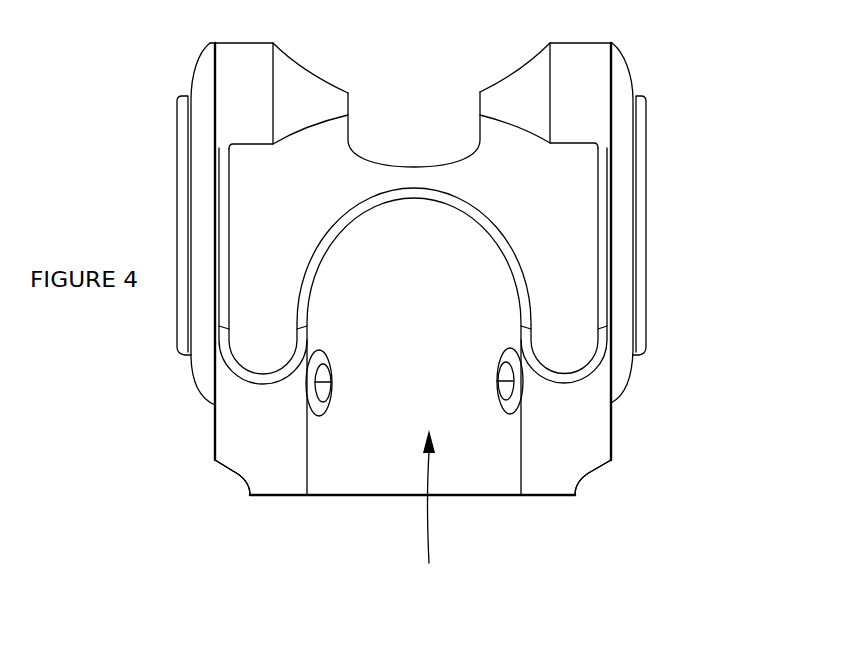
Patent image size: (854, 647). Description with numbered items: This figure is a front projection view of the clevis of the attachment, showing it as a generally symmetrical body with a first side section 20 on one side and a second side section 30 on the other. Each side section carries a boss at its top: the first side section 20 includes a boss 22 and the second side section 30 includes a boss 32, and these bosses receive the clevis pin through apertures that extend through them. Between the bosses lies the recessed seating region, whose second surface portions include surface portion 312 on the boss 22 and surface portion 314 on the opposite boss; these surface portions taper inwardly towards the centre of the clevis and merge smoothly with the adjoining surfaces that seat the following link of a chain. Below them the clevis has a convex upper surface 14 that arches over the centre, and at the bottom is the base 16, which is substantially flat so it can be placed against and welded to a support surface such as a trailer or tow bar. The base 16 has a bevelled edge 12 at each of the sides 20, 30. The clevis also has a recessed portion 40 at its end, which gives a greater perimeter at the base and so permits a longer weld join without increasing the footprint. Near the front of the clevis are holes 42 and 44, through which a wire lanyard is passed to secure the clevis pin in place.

The bevelled edge 12 is at (238, 480).
The convex upper surface 14 is at (563, 310).
The base 16 is at (318, 497).
The first side section 20 is at (162, 163).
The boss 22 is at (236, 76).
The second side section 30 is at (662, 172).
The boss 32 is at (590, 72).
The recessed portion 40 is at (425, 511).
The hole 42 is at (330, 397).
The hole 44 is at (503, 412).
The surface portion 312 is at (300, 67).
The surface portion 314 is at (513, 72).